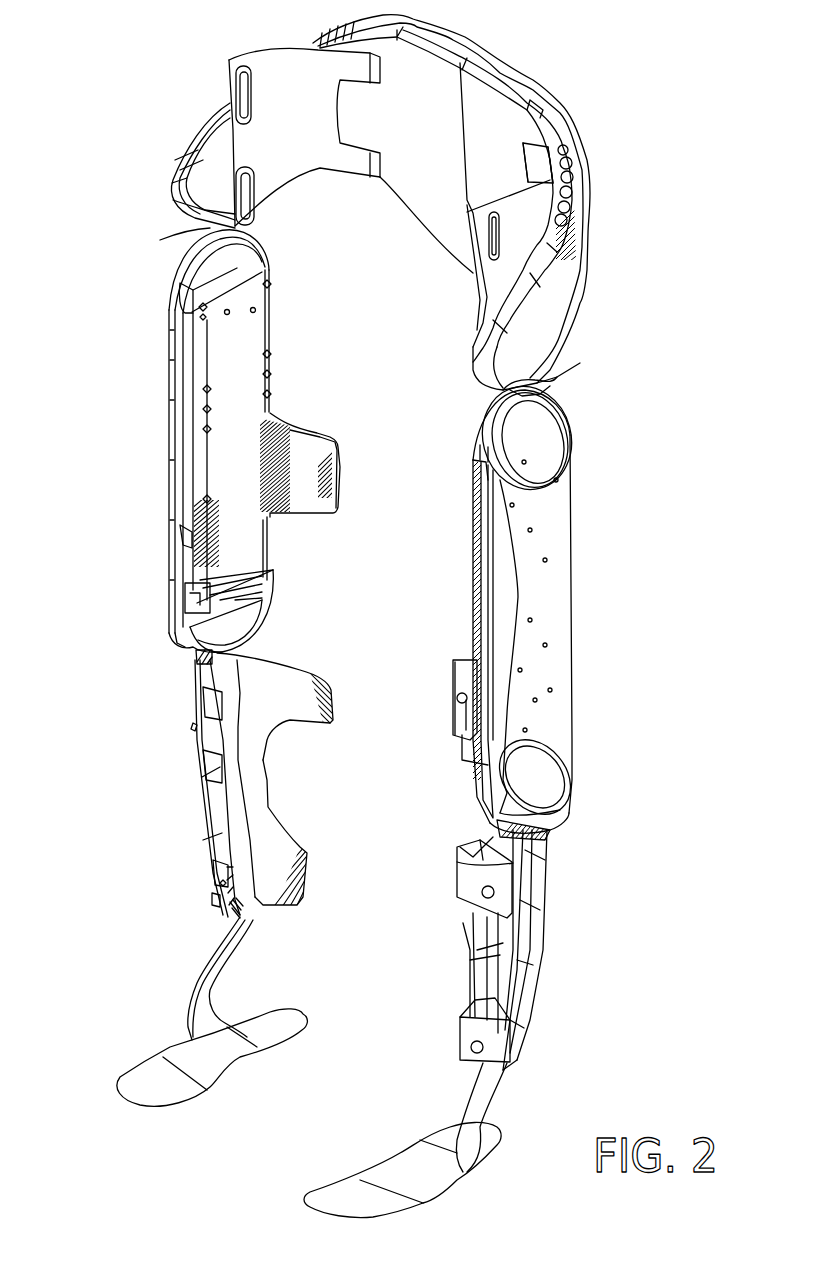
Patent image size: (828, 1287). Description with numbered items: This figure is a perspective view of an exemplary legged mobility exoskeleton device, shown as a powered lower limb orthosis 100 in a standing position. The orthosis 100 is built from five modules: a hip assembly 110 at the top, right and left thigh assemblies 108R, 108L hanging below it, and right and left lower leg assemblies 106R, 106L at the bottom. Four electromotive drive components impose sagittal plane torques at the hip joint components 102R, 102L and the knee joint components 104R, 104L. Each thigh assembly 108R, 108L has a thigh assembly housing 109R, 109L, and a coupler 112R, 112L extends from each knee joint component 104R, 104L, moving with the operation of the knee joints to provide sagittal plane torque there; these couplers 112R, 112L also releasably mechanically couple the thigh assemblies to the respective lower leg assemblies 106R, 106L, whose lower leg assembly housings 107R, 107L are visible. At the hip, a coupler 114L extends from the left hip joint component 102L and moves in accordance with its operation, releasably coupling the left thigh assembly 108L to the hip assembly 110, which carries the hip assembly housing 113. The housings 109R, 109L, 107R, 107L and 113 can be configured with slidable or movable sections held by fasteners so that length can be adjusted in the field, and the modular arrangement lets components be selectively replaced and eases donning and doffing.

The powered lower limb orthosis 100 is at (628, 100).
The hip assembly 110 is at (613, 272).
The hip assembly housing 113 is at (572, 298).
The coupler 114L is at (578, 373).
The hip joint component 102R is at (173, 250).
The hip joint component 102L is at (578, 412).
The thigh assembly 108R is at (163, 423).
The thigh assembly 108L is at (583, 573).
The thigh assembly housing 109R is at (190, 368).
The thigh assembly housing 109L is at (556, 513).
The knee joint component 104R is at (163, 633).
The knee joint component 104L is at (574, 787).
The coupler 112R is at (190, 660).
The coupler 112L is at (547, 837).
The lower leg assembly housing 107R is at (260, 817).
The lower leg assembly housing 107L is at (560, 872).
The lower leg assembly 106R is at (193, 807).
The lower leg assembly 106L is at (560, 922).